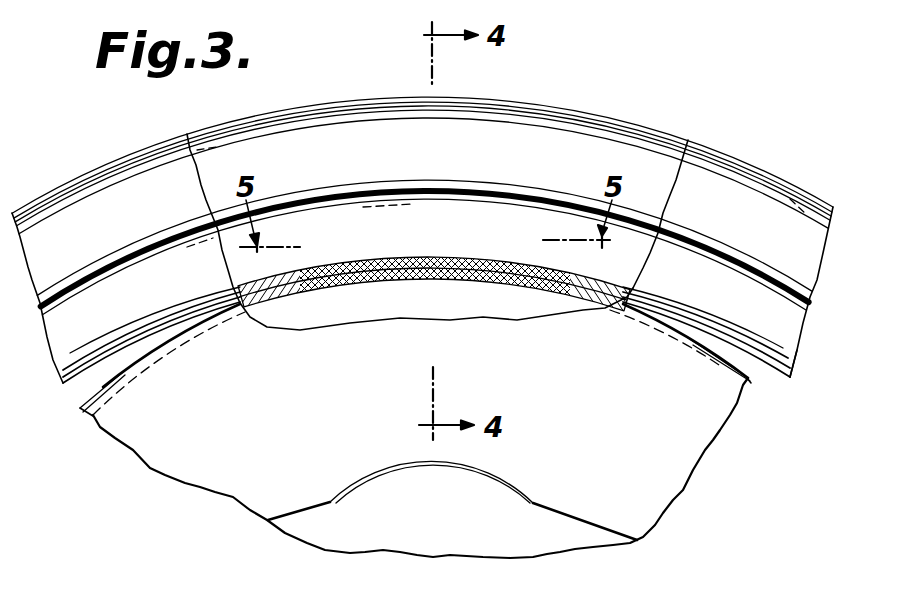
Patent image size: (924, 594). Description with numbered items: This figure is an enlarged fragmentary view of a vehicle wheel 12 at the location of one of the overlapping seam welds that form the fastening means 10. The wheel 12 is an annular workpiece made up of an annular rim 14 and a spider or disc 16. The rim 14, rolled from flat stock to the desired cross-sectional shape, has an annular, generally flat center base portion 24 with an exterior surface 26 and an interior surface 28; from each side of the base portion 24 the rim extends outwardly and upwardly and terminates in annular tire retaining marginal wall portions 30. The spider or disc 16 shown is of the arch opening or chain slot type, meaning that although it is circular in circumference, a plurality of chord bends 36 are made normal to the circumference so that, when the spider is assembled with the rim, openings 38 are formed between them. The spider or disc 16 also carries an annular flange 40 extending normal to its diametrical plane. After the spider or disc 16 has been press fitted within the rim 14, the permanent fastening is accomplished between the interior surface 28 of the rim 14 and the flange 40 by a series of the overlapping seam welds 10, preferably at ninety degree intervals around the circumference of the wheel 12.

The overlapping seam weld fastening means 10 is at (467, 252).
The vehicle wheel 12 is at (696, 495).
The annular rim 14 is at (716, 137).
The spider or disc 16 is at (243, 482).
The center base portion 24 is at (268, 282).
The exterior surface 26 is at (611, 291).
The interior surface 28 is at (790, 377).
The tire retaining marginal wall portions 30 is at (240, 143).
The chord bends 36 is at (121, 374).
The openings 38 is at (92, 384).
The annular flange 40 is at (607, 297).